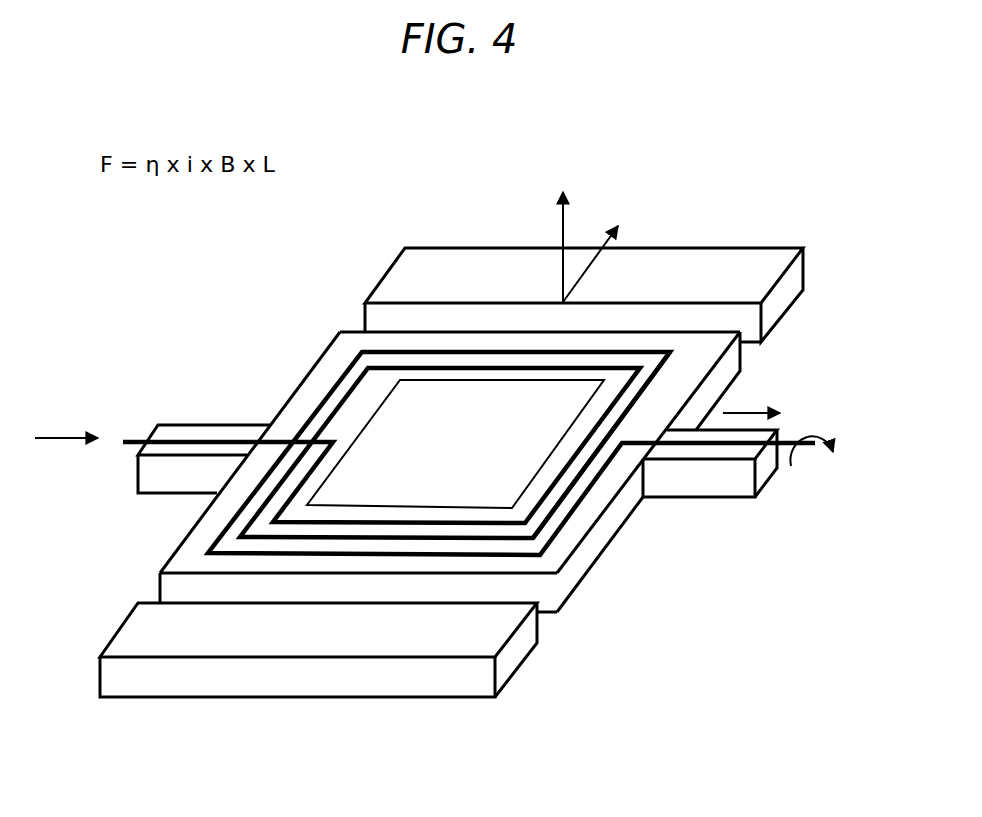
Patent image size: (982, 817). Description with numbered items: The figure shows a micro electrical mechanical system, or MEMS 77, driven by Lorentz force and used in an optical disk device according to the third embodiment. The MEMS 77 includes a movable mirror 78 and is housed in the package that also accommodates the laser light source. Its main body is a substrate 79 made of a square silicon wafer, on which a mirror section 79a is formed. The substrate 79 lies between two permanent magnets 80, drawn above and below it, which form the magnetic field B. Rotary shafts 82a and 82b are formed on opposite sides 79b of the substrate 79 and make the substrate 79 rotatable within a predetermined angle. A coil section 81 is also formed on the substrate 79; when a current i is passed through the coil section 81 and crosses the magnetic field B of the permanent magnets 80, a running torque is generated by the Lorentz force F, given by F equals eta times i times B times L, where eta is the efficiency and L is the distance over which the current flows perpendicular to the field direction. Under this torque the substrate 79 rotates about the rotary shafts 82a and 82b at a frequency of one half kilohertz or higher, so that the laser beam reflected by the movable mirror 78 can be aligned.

The MEMS 77 is at (813, 277).
The movable mirror 78 is at (450, 424).
The substrate 79 is at (469, 472).
The mirror section 79a is at (380, 437).
The opposite sides of the substrate 79b is at (620, 517).
The permanent magnets 80 is at (725, 262).
The coil section 81 is at (567, 527).
The rotary shaft 82a is at (147, 472).
The rotary shaft 82b is at (738, 487).